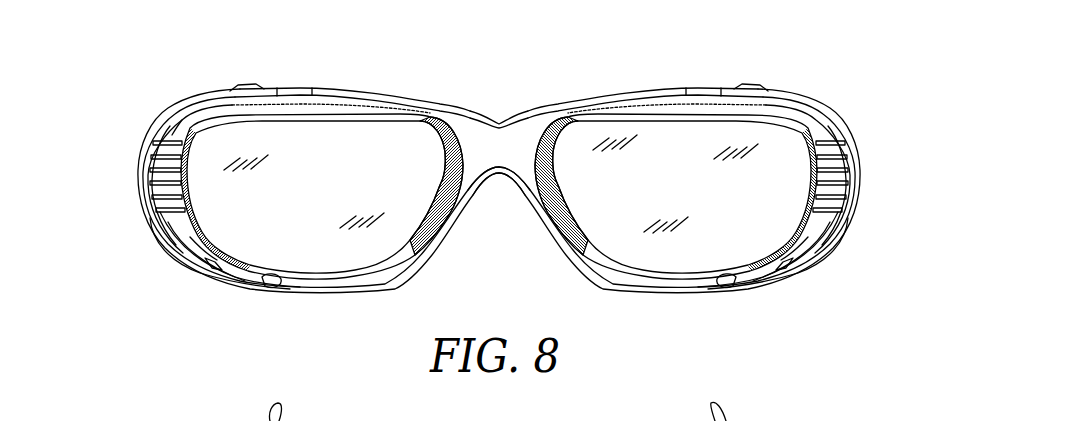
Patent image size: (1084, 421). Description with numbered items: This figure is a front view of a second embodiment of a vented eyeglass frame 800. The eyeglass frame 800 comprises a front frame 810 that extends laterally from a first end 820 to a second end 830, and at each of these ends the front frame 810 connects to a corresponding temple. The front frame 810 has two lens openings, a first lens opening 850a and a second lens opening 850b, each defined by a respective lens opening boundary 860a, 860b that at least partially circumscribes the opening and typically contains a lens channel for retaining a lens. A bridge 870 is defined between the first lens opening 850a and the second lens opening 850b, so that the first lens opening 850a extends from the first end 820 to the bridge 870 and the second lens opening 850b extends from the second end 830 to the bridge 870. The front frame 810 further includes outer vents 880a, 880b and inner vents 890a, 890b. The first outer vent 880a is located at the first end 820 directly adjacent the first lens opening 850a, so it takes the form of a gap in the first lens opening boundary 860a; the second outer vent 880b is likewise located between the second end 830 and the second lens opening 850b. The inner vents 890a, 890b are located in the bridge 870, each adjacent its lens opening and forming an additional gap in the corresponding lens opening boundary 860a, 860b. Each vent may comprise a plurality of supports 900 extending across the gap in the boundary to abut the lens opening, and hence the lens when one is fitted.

The eyeglass frame 800 is at (118, 77).
The front frame 810 is at (330, 280).
The first end 820 is at (163, 207).
The second end 830 is at (823, 223).
The first lens opening 850a is at (232, 230).
The second lens opening 850b is at (700, 230).
The first lens opening boundary 860a is at (360, 90).
The second lens opening boundary 860b is at (643, 90).
The bridge 870 is at (519, 122).
The first outer vent 880a is at (193, 132).
The second outer vent 880b is at (815, 163).
The first inner vent 890a is at (423, 240).
The second inner vent 890b is at (570, 223).
The supports 900 is at (167, 176).